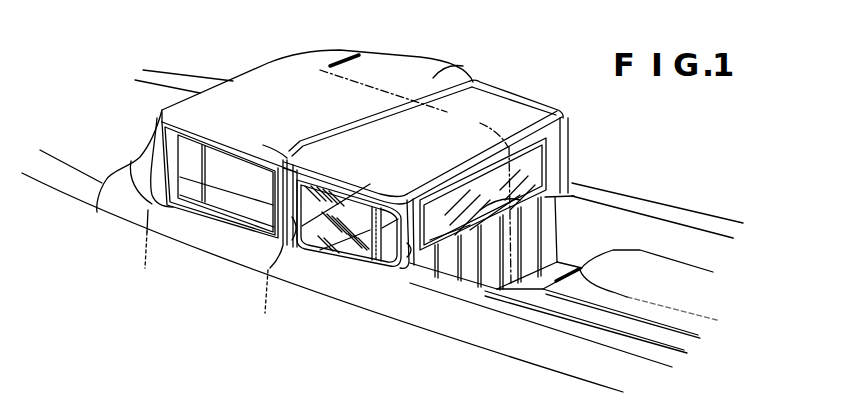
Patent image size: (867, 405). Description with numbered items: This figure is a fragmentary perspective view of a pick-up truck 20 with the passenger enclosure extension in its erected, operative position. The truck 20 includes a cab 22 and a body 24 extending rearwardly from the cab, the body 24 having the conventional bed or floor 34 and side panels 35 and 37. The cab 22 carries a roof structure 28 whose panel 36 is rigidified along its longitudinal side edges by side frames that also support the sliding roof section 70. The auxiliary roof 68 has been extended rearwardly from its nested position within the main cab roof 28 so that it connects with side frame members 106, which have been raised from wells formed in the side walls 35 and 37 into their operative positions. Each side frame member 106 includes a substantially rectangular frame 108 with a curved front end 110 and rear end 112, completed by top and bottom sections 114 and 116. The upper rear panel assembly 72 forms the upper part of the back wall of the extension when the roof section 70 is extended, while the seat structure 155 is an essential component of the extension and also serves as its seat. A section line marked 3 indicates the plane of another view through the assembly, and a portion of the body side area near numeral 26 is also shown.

The pick-up truck 20 is at (427, 58).
The cab 22 is at (268, 62).
The body 24 is at (661, 205).
The body side panel 26 is at (200, 240).
The roof structure 28 is at (238, 97).
The bed or floor 34 is at (635, 305).
The side panel 35 is at (437, 288).
The panel 36 is at (433, 80).
The side panel 37 is at (600, 197).
The auxiliary roof 68 is at (527, 95).
The sliding roof section 70 is at (533, 115).
The upper rear panel assembly 72 is at (577, 193).
The side frame member 106 is at (348, 158).
The rectangular frame 108 is at (377, 190).
The front end 110 is at (293, 233).
The rear end 112 is at (402, 267).
The top section 114 is at (362, 174).
The bottom section 116 is at (337, 267).
The seat structure 155 is at (557, 233).
The section line 3- 3 is at (449, 170).